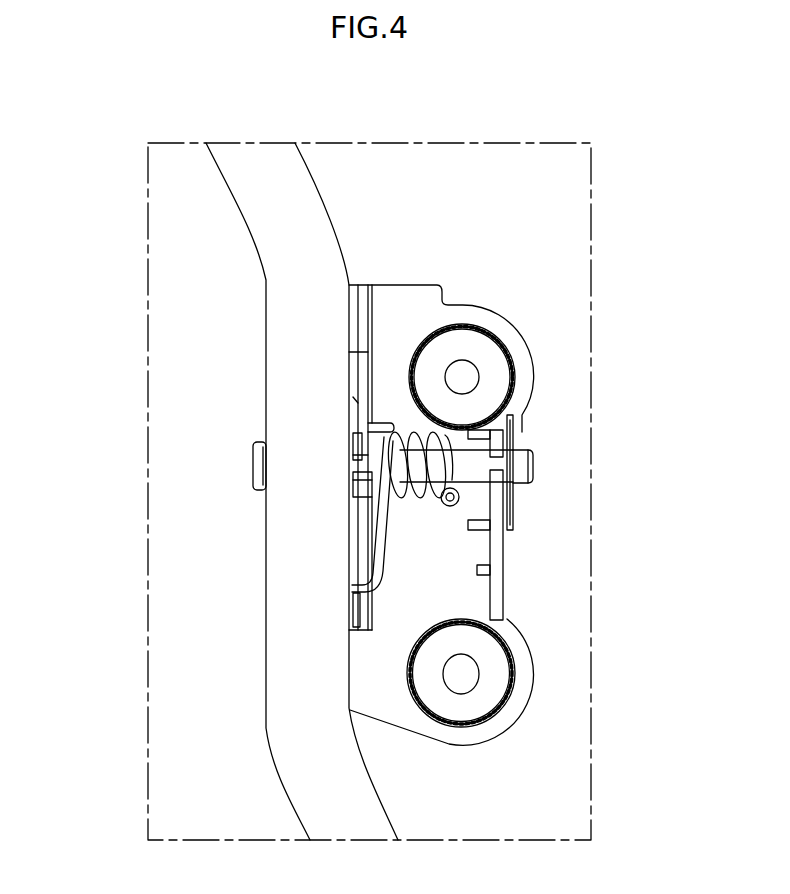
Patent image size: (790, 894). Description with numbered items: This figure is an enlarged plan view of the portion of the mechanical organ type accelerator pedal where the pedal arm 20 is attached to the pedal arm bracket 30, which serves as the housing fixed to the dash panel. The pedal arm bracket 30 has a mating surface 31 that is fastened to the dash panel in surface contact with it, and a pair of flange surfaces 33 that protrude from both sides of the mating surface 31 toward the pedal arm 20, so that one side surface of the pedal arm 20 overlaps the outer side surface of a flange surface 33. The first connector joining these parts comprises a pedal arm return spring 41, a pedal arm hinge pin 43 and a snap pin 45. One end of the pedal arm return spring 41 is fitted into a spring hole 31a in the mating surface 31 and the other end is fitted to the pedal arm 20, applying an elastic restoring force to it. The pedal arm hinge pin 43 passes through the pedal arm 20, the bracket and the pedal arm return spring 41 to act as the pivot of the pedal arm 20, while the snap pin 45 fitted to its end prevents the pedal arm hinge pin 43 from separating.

The pedal arm 20 is at (256, 647).
The pedal arm bracket 30 is at (483, 292).
The mating surface 31 is at (494, 350).
The spring hole 31a is at (455, 505).
The flange surface 33 is at (366, 352).
The pedal arm return spring 41 is at (382, 539).
The pedal arm hinge pin 43 is at (525, 463).
The snap pin 45 is at (514, 508).